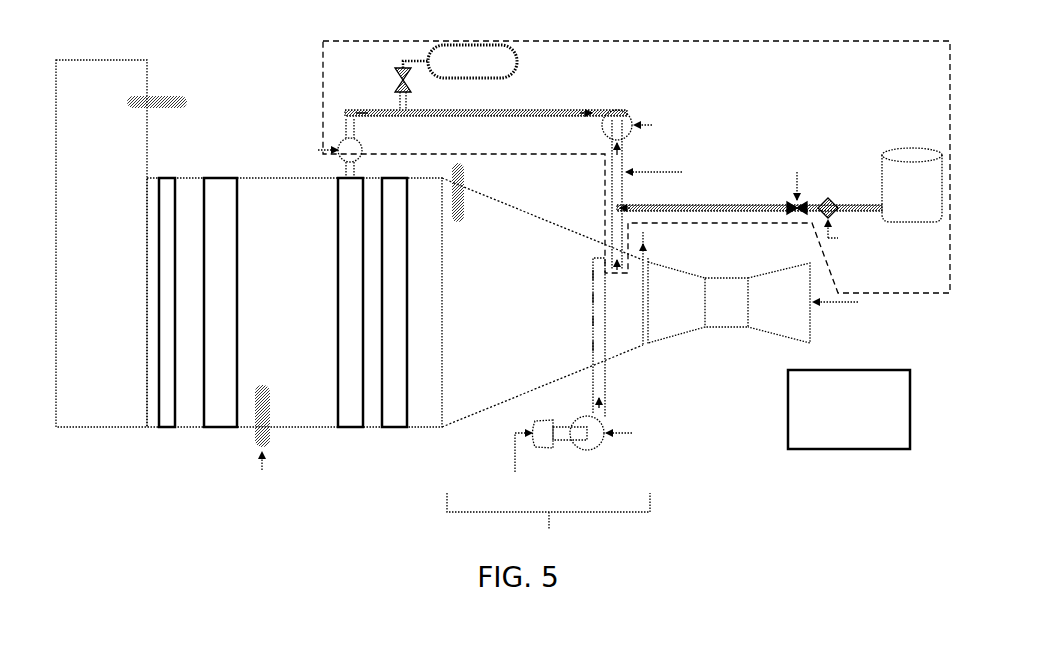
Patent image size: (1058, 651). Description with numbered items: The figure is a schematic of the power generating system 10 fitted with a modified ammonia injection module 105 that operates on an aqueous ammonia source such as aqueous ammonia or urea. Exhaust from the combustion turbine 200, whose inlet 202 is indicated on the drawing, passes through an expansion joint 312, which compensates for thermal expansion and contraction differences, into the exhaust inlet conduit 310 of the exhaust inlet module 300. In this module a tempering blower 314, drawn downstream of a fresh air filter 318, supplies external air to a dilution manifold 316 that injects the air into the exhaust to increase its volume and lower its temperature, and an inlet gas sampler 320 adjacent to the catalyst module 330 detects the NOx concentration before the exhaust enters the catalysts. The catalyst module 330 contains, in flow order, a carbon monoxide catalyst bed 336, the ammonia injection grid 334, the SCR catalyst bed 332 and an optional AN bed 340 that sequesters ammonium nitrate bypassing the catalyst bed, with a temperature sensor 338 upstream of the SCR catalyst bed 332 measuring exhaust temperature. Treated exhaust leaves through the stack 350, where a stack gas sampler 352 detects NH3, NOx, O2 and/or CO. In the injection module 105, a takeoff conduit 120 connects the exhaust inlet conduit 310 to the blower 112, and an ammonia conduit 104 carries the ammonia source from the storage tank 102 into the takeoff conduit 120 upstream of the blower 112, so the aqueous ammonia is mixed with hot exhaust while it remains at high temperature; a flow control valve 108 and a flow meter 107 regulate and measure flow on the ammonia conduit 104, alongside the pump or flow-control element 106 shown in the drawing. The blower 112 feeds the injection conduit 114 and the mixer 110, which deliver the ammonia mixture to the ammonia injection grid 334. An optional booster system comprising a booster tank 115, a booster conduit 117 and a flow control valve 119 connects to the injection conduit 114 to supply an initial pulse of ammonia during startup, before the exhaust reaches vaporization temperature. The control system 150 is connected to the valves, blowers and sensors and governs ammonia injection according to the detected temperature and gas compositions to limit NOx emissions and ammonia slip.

The power generating system 10 is at (503, 217).
The ammonia injection module 105 is at (765, 40).
The stack gas sampler 352 is at (157, 97).
The exhaust stack 350 is at (101, 243).
The catalyst module 330 is at (302, 428).
The AN bed 340 is at (165, 428).
The SCR catalyst bed 332 is at (225, 428).
The ammonia injection grid 334 is at (352, 428).
The carbon monoxide catalyst bed 336 is at (397, 428).
The temperature sensor 338 is at (264, 456).
The exhaust inlet conduit 310 is at (542, 302).
The inlet gas sampler 320 is at (465, 193).
The mixer 110 is at (318, 148).
The injection conduit 114 is at (550, 115).
The flow control valve 119 is at (397, 80).
The booster conduit 117 is at (398, 62).
The booster tank 115 is at (472, 61).
The blower 112 is at (659, 133).
The takeoff conduit 120 is at (663, 195).
The ammonia conduit 104 is at (740, 200).
The flow meter 107 is at (829, 187).
The variable speed pump / flow control 106 is at (858, 241).
The storage tank 102 is at (912, 185).
The flow control valve 108 is at (860, 165).
The expansion joint 312 is at (686, 288).
The combustion turbine 200 is at (727, 327).
The inlet 202 is at (866, 304).
The dilution manifold 316 is at (602, 323).
The tempering blower 314 is at (624, 446).
The fresh air filter 318 is at (530, 464).
The exhaust inlet module 300 is at (548, 526).
The control system 150 is at (849, 409).